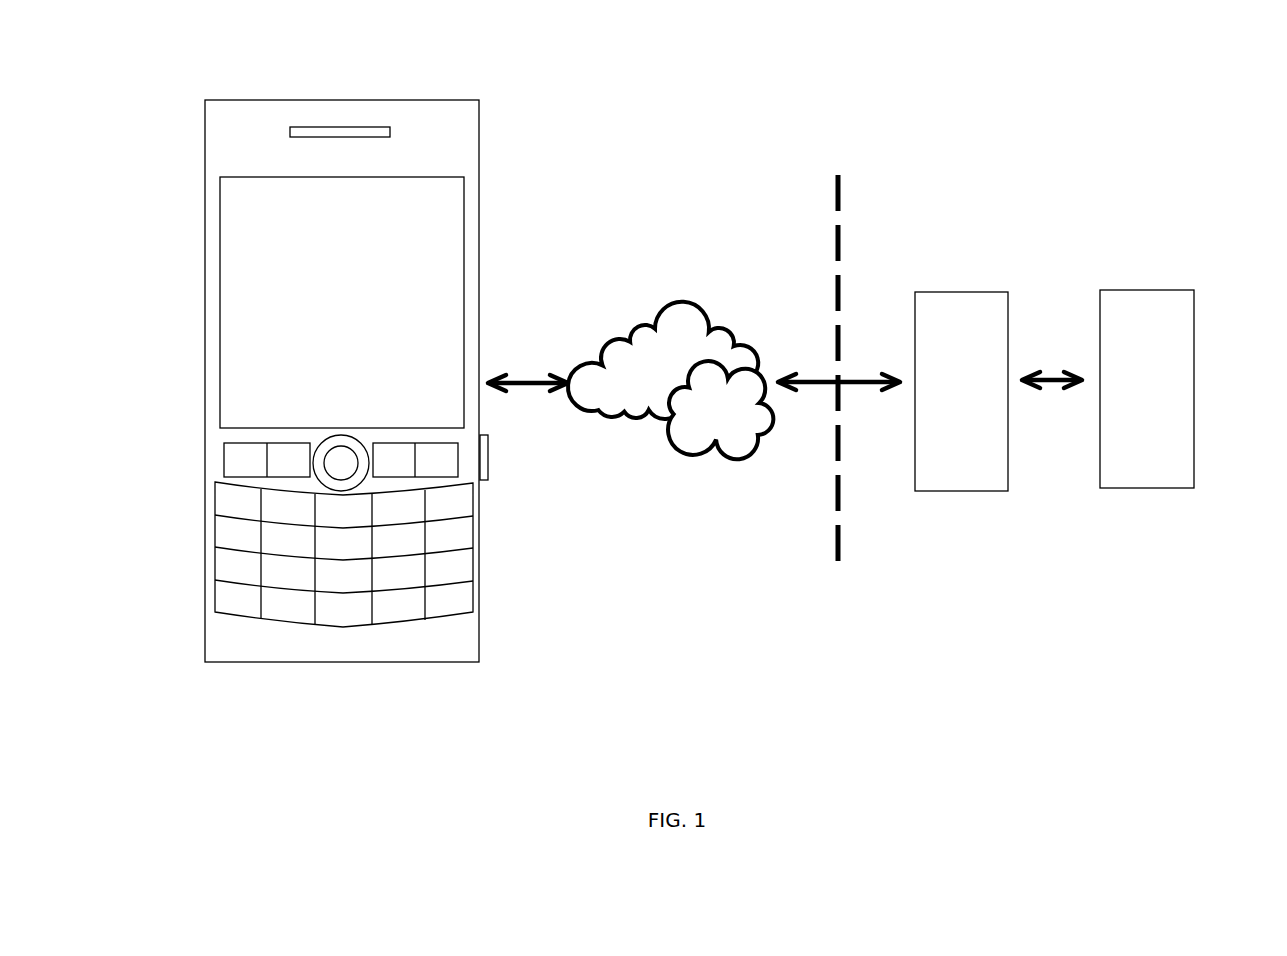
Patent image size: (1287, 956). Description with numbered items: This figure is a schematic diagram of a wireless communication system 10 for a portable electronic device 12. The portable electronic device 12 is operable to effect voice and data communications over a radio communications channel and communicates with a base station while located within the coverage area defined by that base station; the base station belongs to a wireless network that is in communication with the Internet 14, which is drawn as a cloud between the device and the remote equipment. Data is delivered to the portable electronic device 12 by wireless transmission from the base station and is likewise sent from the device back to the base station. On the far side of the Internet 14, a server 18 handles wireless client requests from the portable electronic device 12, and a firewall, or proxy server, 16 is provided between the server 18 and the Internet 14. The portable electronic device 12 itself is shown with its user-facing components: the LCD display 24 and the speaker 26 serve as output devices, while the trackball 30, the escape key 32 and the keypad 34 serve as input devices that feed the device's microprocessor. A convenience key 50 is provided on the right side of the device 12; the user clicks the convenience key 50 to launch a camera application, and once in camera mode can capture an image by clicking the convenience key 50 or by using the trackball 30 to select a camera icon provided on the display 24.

The communication system 10 is at (1012, 618).
The portable electronic device 12 is at (341, 652).
The Internet 14 is at (677, 328).
The firewall 16 is at (972, 308).
The server 18 is at (1158, 310).
The LCD display 24 is at (329, 304).
The speaker 26 is at (369, 133).
The trackball 30 is at (340, 459).
The escape key 32 is at (397, 463).
The keypad 34 is at (419, 569).
The convenience key 50 is at (488, 458).